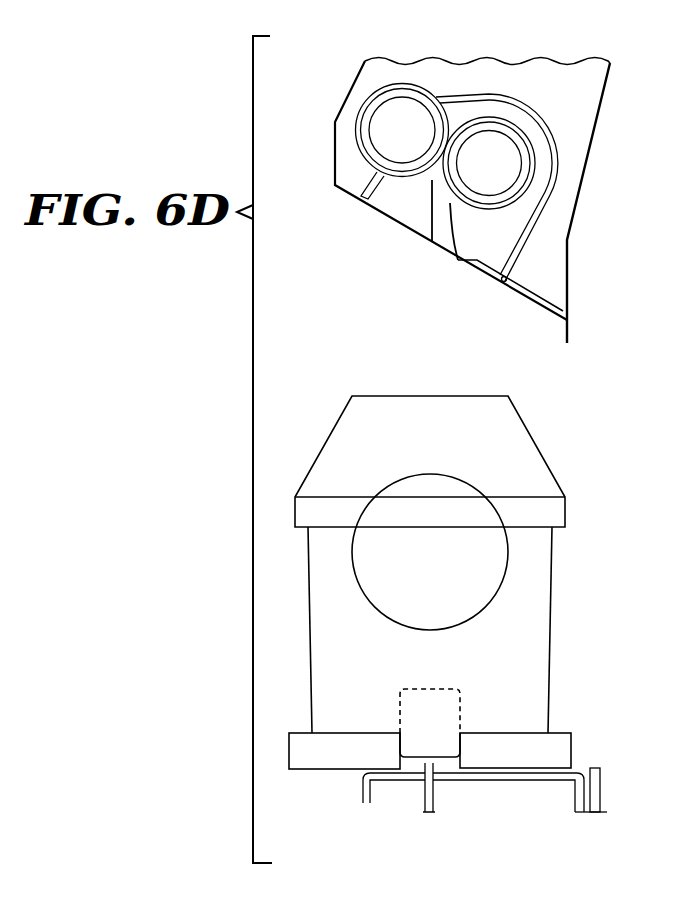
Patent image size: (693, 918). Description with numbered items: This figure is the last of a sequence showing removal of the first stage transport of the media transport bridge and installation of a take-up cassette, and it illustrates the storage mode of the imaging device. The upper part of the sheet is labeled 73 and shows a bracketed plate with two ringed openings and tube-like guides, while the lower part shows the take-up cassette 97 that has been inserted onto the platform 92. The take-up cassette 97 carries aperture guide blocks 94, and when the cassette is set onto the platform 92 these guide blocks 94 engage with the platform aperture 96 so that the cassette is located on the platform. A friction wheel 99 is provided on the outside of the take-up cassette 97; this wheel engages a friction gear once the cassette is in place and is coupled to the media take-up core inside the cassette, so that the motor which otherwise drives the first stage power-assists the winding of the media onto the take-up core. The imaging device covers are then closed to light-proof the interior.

The plate with tube guides 73 is at (617, 78).
The take-up cassette 97 is at (497, 449).
The friction wheel 99 is at (472, 571).
The platform 92 is at (548, 752).
The aperture guide blocks 94 is at (435, 740).
The platform aperture 96 is at (413, 763).